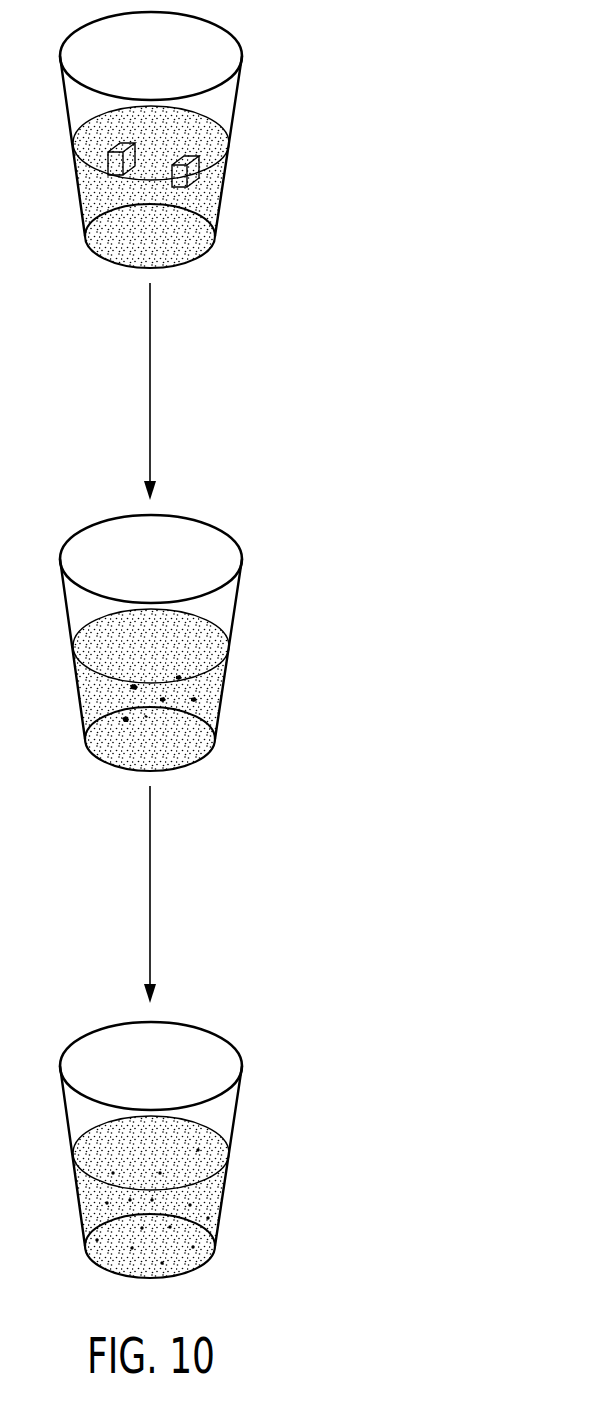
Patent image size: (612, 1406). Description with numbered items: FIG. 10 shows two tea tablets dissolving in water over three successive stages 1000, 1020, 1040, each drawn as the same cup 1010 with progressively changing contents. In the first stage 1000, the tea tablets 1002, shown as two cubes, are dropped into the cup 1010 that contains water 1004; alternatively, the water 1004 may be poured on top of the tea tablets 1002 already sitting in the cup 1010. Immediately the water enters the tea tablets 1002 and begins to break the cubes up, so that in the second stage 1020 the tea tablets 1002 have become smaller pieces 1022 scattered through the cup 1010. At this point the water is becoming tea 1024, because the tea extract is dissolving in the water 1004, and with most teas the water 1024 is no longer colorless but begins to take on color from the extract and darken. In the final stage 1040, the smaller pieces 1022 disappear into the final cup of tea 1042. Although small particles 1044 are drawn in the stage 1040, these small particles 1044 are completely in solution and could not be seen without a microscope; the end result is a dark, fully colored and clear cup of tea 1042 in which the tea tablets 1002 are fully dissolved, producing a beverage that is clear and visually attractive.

The cup 1010 is at (222, 29).
The first dissolving stage 1000 is at (283, 123).
The tea tablets 1002 is at (122, 176).
The water 1004 is at (213, 178).
The second dissolving stage 1020 is at (283, 626).
The smaller pieces 1022 is at (178, 678).
The tea 1024 is at (213, 681).
The final dissolving stage 1040 is at (283, 1133).
The final cup of tea 1042 is at (213, 1188).
The small particles 1044 is at (208, 1218).